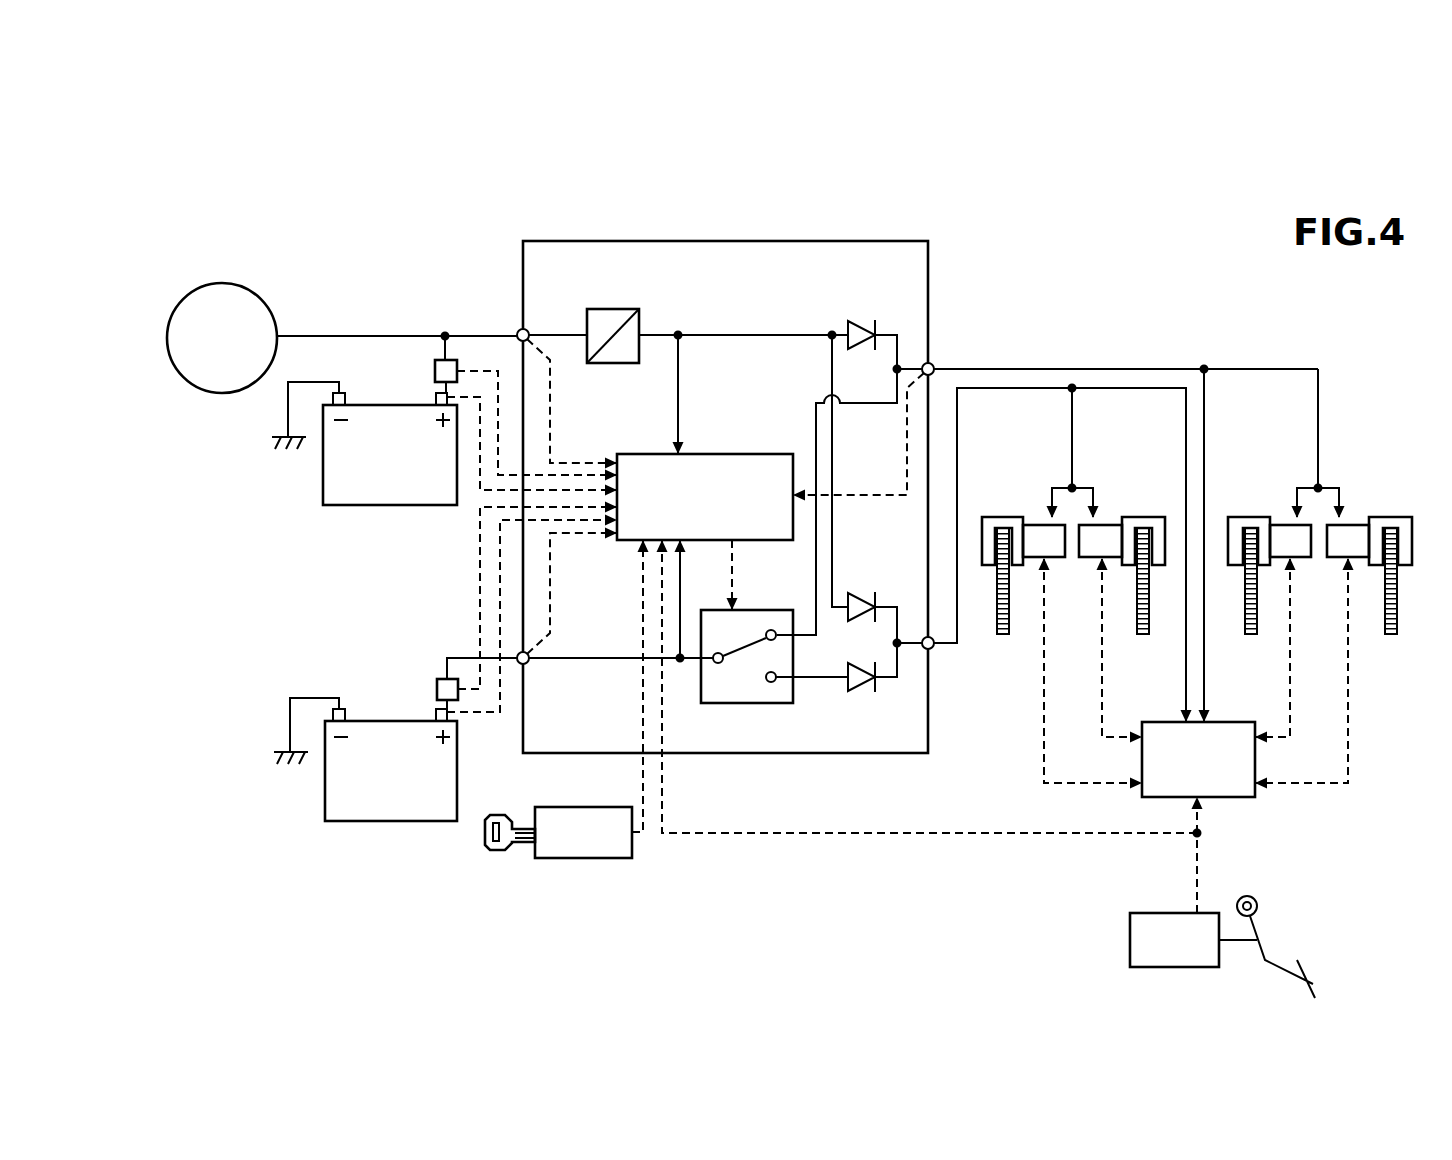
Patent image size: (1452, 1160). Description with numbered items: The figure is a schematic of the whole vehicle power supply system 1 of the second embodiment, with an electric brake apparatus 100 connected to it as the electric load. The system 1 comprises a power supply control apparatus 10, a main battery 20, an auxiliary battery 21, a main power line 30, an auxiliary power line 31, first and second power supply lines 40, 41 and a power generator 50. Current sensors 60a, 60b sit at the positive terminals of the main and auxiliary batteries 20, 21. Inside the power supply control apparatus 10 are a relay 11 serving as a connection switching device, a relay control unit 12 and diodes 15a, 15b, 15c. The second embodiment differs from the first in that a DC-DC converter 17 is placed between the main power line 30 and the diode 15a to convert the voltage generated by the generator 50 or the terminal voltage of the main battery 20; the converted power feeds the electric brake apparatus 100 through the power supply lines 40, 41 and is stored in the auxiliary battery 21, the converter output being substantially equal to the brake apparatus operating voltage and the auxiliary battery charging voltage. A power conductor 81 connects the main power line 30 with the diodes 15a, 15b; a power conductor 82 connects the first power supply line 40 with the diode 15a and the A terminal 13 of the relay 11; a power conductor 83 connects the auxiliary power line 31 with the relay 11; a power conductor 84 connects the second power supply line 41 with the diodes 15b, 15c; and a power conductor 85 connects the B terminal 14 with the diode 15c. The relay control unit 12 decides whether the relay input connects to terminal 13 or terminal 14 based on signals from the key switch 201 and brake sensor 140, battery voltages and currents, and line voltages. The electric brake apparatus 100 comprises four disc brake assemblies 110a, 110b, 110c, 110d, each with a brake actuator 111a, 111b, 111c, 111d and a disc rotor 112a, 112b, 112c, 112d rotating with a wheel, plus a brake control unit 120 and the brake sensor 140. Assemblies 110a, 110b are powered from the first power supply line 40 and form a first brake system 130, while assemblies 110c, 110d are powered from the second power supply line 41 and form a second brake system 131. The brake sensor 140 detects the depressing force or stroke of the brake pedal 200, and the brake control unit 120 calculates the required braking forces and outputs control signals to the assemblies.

The vehicle power supply system 1 is at (665, 238).
The power supply control apparatus 10 is at (822, 240).
The relay 11 is at (715, 607).
The relay control unit 12 is at (734, 452).
The A terminal 13 is at (773, 629).
The B terminal 14 is at (772, 683).
The diode 15a is at (848, 330).
The diode 15b is at (860, 600).
The diode 15c is at (871, 688).
The DC-DC converter 17 is at (614, 366).
The main battery 20 is at (390, 508).
The auxiliary battery 21 is at (390, 824).
The main power line 30 is at (477, 334).
The auxiliary power line 31 is at (456, 657).
The first power supply line 40 is at (957, 365).
The second power supply line 41 is at (947, 650).
The power generator 50 is at (223, 283).
The current sensor 60a is at (435, 368).
The current sensor 60b is at (435, 686).
The power conductor 81 is at (783, 338).
The power conductor 82 is at (867, 405).
The power conductor 83 is at (570, 662).
The power conductor 84 is at (909, 648).
The power conductor 85 is at (823, 680).
The electric brake apparatus 100 is at (1189, 351).
The disc brake assembly 110a is at (1375, 513).
The disc brake assembly 110b is at (1235, 513).
The disc brake assembly 110c is at (1128, 515).
The disc brake assembly 110d is at (988, 515).
The brake actuator 111a is at (1397, 515).
The brake actuator 111b is at (1259, 515).
The brake actuator 111c is at (1160, 515).
The brake actuator 111d is at (1013, 515).
The disc rotor 112a is at (1391, 636).
The disc rotor 112b is at (1251, 636).
The disc rotor 112c is at (1143, 636).
The disc rotor 112d is at (1003, 636).
The brake control unit 120 is at (1228, 800).
The first brake system 130 is at (1332, 480).
The second brake system 131 is at (1065, 480).
The brake sensor 140 is at (1150, 911).
The brake pedal 200 is at (1268, 942).
The key switch 201 is at (585, 861).